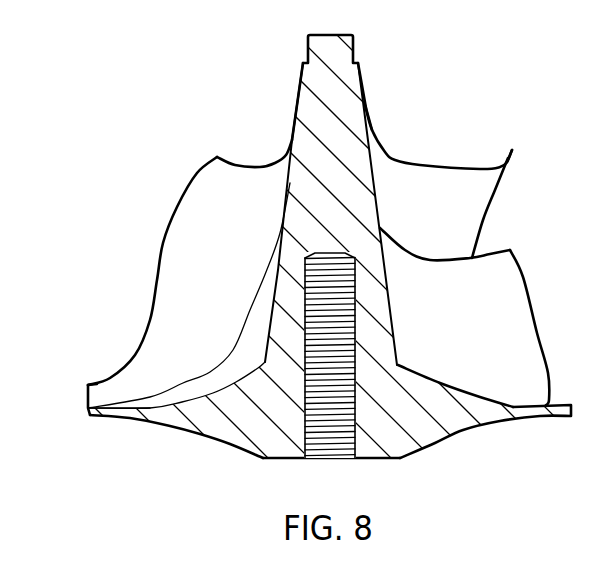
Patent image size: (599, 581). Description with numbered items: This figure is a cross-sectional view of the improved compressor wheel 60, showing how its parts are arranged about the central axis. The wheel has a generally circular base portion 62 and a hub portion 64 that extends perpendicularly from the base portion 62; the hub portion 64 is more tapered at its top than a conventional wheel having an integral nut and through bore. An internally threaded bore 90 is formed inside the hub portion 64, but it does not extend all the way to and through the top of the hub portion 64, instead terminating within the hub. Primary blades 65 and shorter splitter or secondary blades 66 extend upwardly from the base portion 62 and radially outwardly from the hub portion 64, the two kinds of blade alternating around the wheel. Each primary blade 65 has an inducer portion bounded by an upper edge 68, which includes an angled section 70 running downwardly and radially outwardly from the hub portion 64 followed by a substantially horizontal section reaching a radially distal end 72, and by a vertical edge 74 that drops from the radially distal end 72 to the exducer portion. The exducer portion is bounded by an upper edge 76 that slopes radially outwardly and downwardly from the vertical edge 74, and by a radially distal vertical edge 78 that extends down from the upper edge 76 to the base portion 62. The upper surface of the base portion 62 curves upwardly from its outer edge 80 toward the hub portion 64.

The compressor wheel 60 is at (472, 57).
The base portion 62 is at (225, 422).
The hub portion 64 is at (320, 75).
The primary blades 65 is at (298, 274).
The secondary blades 66 is at (464, 317).
The upper edge 68 is at (393, 152).
The angled section 70 is at (371, 115).
The radially distal end 72 is at (512, 150).
The vertical edge 74 is at (163, 238).
The upper edge 76 is at (115, 371).
The radially distal vertical edge 78 is at (86, 394).
The edge 80 is at (96, 408).
The internally threaded bore 90 is at (340, 432).